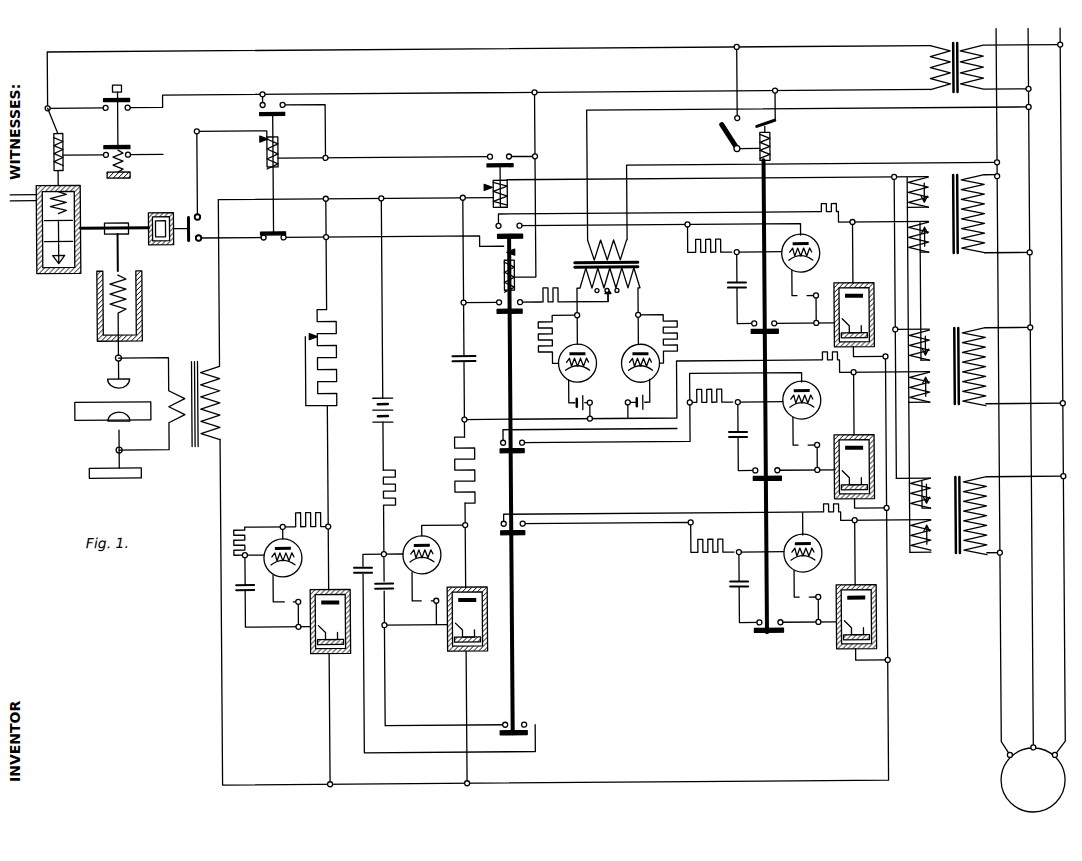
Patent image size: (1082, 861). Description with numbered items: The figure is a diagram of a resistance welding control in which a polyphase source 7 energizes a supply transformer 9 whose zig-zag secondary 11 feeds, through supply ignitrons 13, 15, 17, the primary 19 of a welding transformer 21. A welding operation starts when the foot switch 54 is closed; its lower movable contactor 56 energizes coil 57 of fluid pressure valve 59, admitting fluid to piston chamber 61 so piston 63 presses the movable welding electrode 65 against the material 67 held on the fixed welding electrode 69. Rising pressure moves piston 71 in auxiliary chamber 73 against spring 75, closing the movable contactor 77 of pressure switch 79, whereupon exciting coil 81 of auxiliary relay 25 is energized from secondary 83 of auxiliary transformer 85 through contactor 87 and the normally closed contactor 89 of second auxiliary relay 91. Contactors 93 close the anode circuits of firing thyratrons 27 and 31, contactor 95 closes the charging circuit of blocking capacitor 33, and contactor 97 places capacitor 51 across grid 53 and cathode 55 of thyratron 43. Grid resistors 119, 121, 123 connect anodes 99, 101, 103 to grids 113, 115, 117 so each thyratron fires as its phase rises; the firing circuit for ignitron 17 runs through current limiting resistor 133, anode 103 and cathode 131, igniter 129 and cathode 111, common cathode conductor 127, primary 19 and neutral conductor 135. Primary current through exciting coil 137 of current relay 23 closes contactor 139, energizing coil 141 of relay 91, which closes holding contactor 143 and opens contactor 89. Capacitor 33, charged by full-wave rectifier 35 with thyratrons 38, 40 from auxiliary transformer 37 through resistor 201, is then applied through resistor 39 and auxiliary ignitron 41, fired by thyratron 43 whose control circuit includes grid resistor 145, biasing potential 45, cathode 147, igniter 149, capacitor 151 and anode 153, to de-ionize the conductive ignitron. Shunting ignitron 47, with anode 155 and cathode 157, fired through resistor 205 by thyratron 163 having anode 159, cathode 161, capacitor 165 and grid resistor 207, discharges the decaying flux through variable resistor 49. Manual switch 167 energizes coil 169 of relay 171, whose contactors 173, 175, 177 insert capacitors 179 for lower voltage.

The polyphase source 7 is at (998, 780).
The supply transformer 9 is at (960, 220).
The secondary of the supply transformer 11 is at (946, 330).
The electric discharge valve (supply ignitron) 13 is at (872, 285).
The electric discharge valve (supply ignitron) 15 is at (855, 437).
The electric discharge valve (supply ignitron) 17 is at (857, 587).
The primary of the welding transformer 19 is at (222, 378).
The welding transformer 21 is at (198, 392).
The current relay 23 is at (512, 193).
The auxiliary relay 25 is at (493, 273).
The igniter valve (firing thyratron) 27 is at (812, 243).
The igniter valve (firing thyratron) 31 is at (815, 543).
The blocking capacitor 33 is at (462, 356).
The full-wave rectifier 35 is at (599, 350).
The auxiliary transformer 37 is at (623, 256).
The thyratron 38 is at (568, 372).
The resistor 39 is at (458, 470).
The thyratron 40 is at (650, 374).
The auxiliary valve (auxiliary ignitron) 41 is at (468, 628).
The thyratron 43 is at (430, 545).
The biasing potential 45 is at (393, 400).
The shunting discharge valve (shunting ignitron) 47 is at (321, 621).
The variable resistor 49 is at (318, 312).
The capacitor 51 is at (362, 560).
The grid 53 is at (410, 546).
The foot switch (manual controller) 54 is at (118, 107).
The cathode 55 is at (434, 567).
The lower movable contactor 56 is at (128, 143).
The energizing coil 57 is at (62, 138).
The fluid pressure valve 59 is at (82, 200).
The piston chamber 61 is at (97, 280).
The piston 63 is at (143, 300).
The movable welding electrode 65 is at (108, 376).
The material to be welded 67 is at (86, 416).
The fixed welding electrode 69 is at (107, 434).
The piston 71 is at (157, 210).
The auxiliary chamber 73 is at (165, 243).
The spring 75 is at (170, 212).
The movable contactor 77 is at (190, 240).
The pressure switch 79 is at (205, 226).
The exciting coil 81 is at (508, 250).
The secondary 83 is at (933, 66).
The auxiliary transformer 85 is at (958, 69).
The manual controller contactor 87 is at (131, 96).
The normally closed contactor 89 is at (283, 228).
The second auxiliary relay 91 is at (261, 153).
The movable contactors 93 is at (498, 222).
The movable contactor 95 is at (500, 313).
The movable contactor 97 is at (500, 738).
The anode 99 is at (794, 247).
The anode 101 is at (796, 395).
The anode 103 is at (797, 546).
The cathode 111 is at (824, 640).
The grid 113 is at (813, 253).
The grid 115 is at (813, 402).
The grid 117 is at (813, 554).
The grid resistor 119 is at (692, 242).
The grid resistor 121 is at (692, 393).
The grid resistor 123 is at (692, 543).
The common cathode conductor 127 is at (786, 783).
The igniter 129 is at (813, 392).
The cathode 131 is at (813, 566).
The current limiting resistor 133 is at (823, 207).
The neutral conductor 135 is at (822, 211).
The exciting coil 137 is at (486, 187).
The contactor 139 is at (487, 165).
The exciting coil 141 is at (281, 146).
The contactor 143 is at (262, 113).
The grid resistor 145 is at (396, 490).
The cathode 147 is at (460, 650).
The igniter 149 is at (452, 634).
The capacitor 151 is at (389, 592).
The anode 153 is at (470, 584).
The anode 155 is at (332, 582).
The cathode 157 is at (312, 657).
The anode 159 is at (291, 544).
The cathode 161 is at (299, 566).
The firing thyratron 163 is at (280, 542).
The capacitor 165 is at (246, 589).
The manual switch 167 is at (721, 127).
The exciting coil 169 is at (777, 122).
The relay 171 is at (781, 145).
The contactor 173 is at (760, 336).
The contactor 175 is at (760, 483).
The contactor 177 is at (778, 638).
The capacitors 179 is at (731, 290).
The resistor 201 is at (541, 290).
The current limiting resistor 205 is at (308, 510).
The grid resistor 207 is at (235, 530).